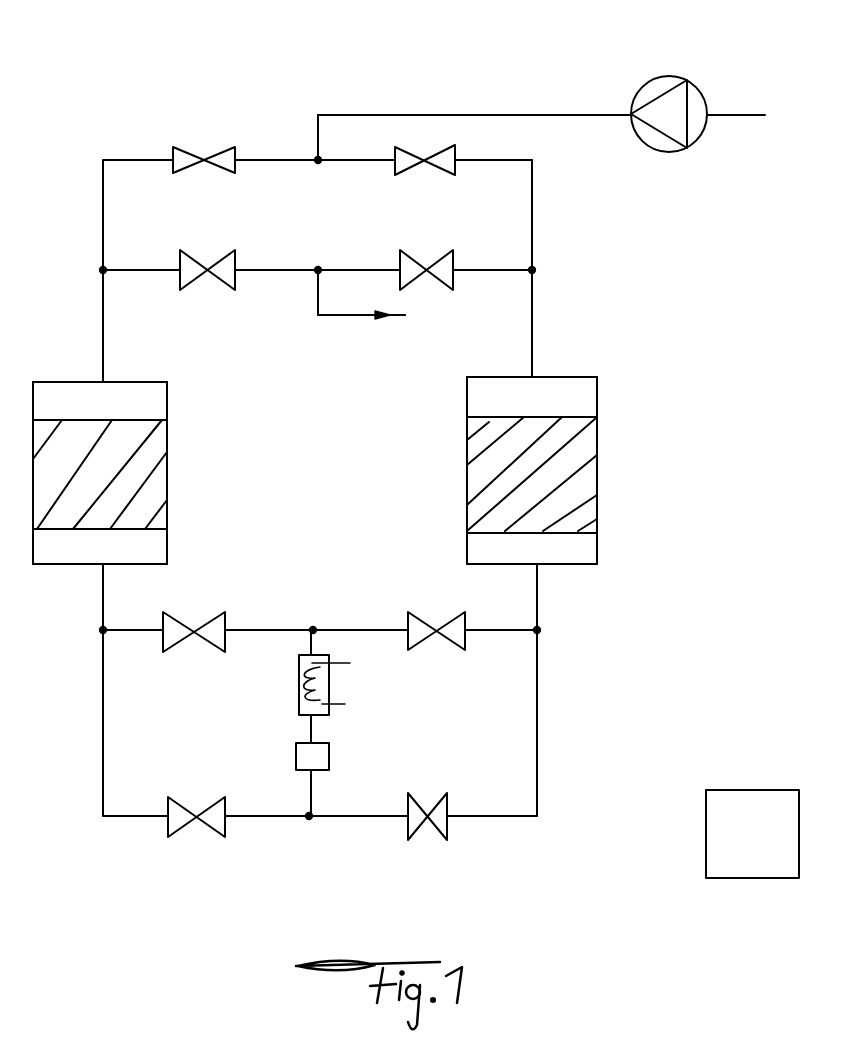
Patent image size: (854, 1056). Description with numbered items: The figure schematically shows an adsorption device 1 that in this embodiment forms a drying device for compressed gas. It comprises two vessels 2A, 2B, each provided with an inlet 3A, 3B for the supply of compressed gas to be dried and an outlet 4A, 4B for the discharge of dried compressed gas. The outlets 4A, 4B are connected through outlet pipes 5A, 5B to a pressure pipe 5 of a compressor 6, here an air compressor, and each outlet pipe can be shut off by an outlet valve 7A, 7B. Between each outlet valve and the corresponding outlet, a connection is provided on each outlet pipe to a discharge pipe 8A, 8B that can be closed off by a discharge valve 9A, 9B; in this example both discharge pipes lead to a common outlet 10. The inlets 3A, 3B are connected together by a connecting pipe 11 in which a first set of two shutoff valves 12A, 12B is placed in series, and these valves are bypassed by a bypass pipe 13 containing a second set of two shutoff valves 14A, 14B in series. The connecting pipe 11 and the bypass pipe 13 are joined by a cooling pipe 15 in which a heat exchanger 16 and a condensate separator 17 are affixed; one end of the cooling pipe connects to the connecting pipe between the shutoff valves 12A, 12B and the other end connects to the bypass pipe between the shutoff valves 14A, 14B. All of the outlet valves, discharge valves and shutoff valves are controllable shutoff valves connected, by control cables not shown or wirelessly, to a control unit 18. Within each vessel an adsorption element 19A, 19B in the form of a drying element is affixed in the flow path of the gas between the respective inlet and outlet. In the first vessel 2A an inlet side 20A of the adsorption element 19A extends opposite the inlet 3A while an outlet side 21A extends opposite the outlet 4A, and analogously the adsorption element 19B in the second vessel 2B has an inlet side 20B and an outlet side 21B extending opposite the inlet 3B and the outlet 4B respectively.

The adsorption device 1 is at (680, 463).
The vessel 2A is at (156, 463).
The vessel 2B is at (582, 463).
The inlet 3A is at (101, 566).
The inlet 3B is at (540, 566).
The outlet 4A is at (103, 380).
The outlet 4B is at (532, 377).
The pressure pipe 5 is at (549, 113).
The outlet pipe 5A is at (267, 157).
The outlet pipe 5B is at (532, 205).
The compressor 6 is at (700, 88).
The outlet valve 7A is at (223, 150).
The outlet valve 7B is at (433, 147).
The discharge pipe 8A is at (262, 268).
The discharge pipe 8B is at (485, 272).
The discharge valve 9A is at (223, 265).
The discharge valve 9B is at (453, 262).
The common outlet 10 is at (387, 322).
The connecting pipe 11 is at (537, 725).
The shutoff valve 12A is at (213, 826).
The shutoff valve 12B is at (436, 820).
The bypass pipe 13 is at (257, 632).
The shutoff valve 14A is at (167, 643).
The shutoff valve 14B is at (455, 645).
The cooling pipe 15 is at (310, 790).
The heat exchanger 16 is at (320, 708).
The condensate separator 17 is at (317, 760).
The control unit 18 is at (730, 858).
The adsorption element 19A is at (140, 475).
The adsorption element 19B is at (573, 490).
The inlet side 20A is at (148, 542).
The inlet side 20B is at (586, 546).
The outlet side 21A is at (150, 410).
The outlet side 21B is at (583, 405).